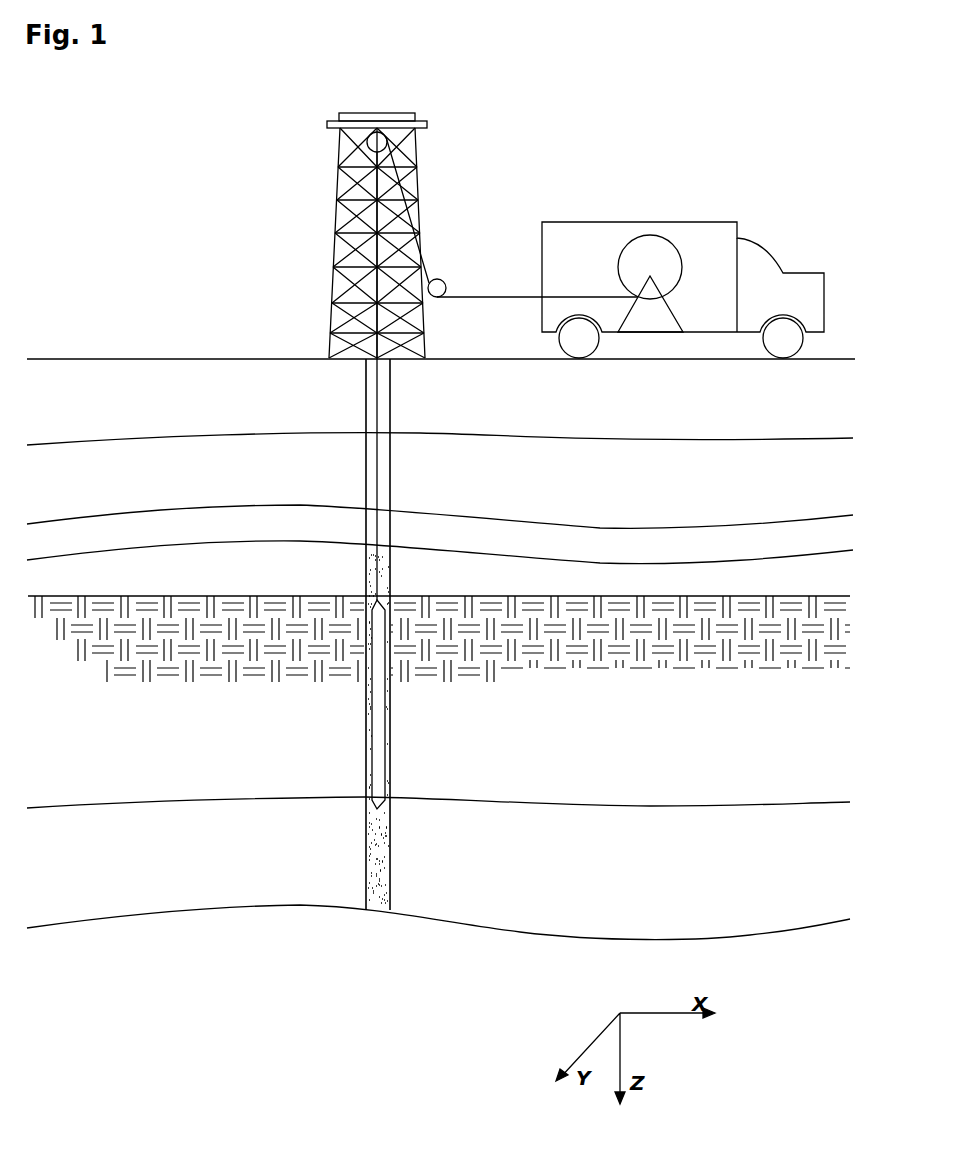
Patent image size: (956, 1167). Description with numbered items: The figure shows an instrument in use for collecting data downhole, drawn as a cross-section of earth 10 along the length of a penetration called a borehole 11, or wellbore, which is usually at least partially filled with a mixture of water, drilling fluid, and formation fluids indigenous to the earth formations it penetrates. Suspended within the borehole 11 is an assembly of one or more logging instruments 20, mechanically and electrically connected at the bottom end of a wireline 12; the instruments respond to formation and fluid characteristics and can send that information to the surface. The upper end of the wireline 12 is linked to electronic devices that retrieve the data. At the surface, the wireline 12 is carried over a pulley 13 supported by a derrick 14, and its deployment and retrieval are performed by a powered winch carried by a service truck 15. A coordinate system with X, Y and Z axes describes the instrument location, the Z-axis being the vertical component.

The earth 10 is at (668, 495).
The borehole 11 is at (380, 462).
The wireline 12 is at (378, 496).
The pulley 13 is at (366, 140).
The derrick 14 is at (331, 302).
The service truck 15 is at (700, 228).
The logging instruments 20 is at (382, 770).